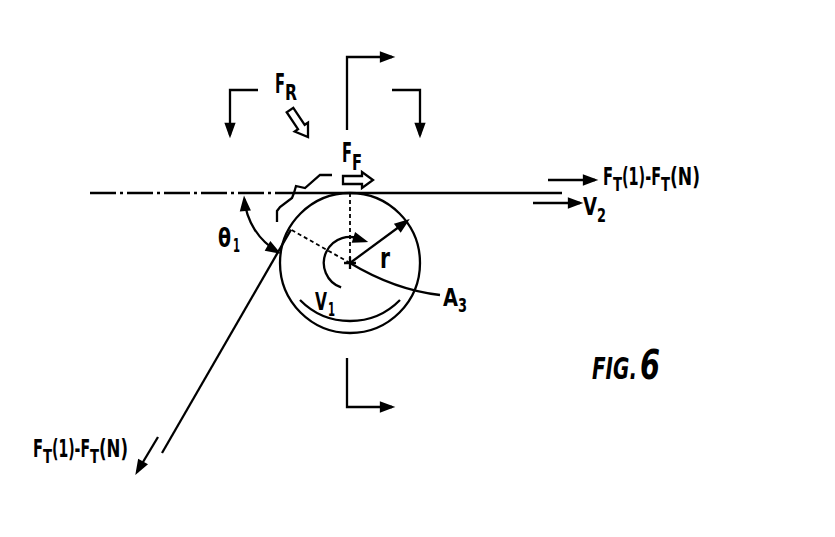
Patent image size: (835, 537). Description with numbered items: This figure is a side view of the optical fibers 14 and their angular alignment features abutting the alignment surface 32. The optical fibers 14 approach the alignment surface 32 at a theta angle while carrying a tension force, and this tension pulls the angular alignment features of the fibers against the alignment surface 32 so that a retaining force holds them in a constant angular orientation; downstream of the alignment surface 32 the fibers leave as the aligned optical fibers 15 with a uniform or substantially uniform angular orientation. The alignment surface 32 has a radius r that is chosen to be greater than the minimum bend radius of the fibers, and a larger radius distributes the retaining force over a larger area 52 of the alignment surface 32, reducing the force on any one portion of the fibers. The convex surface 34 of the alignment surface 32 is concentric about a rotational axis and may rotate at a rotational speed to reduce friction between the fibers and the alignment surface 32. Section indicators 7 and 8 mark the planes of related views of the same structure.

The section line 7- 7 is at (377, 235).
The section line 8- 8 is at (320, 133).
The optical fibers 14 is at (197, 380).
The aligned optical fibers 15 is at (468, 185).
The alignment surface 32 is at (423, 263).
The convex surface 34 is at (327, 328).
The area 52 is at (302, 189).